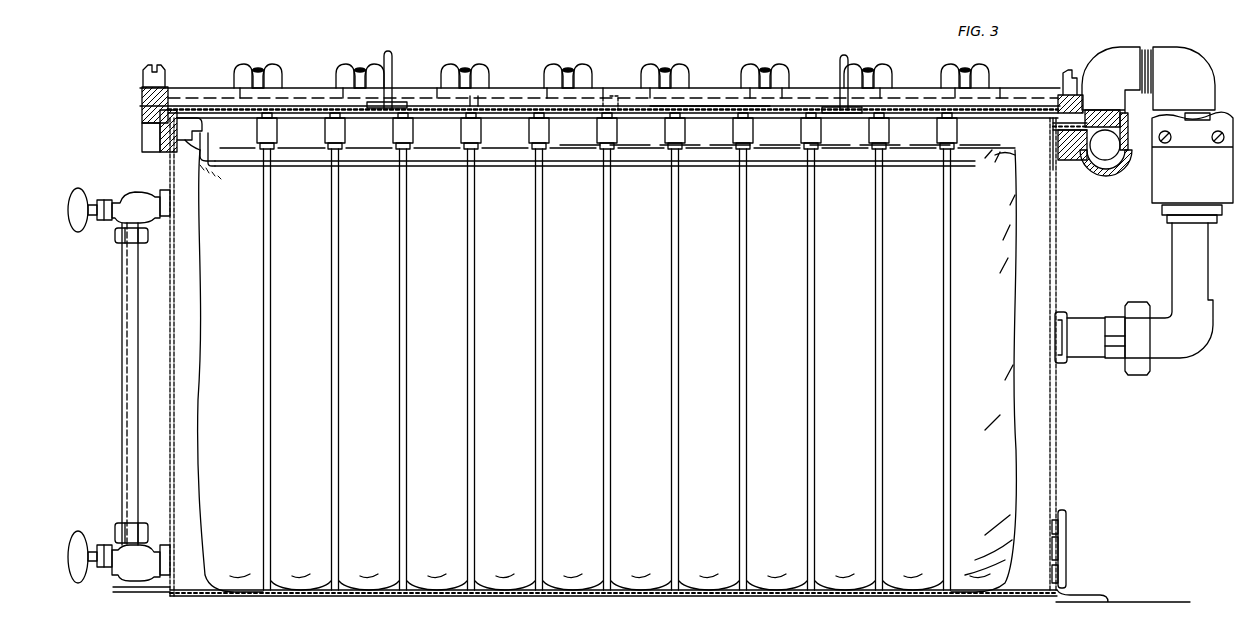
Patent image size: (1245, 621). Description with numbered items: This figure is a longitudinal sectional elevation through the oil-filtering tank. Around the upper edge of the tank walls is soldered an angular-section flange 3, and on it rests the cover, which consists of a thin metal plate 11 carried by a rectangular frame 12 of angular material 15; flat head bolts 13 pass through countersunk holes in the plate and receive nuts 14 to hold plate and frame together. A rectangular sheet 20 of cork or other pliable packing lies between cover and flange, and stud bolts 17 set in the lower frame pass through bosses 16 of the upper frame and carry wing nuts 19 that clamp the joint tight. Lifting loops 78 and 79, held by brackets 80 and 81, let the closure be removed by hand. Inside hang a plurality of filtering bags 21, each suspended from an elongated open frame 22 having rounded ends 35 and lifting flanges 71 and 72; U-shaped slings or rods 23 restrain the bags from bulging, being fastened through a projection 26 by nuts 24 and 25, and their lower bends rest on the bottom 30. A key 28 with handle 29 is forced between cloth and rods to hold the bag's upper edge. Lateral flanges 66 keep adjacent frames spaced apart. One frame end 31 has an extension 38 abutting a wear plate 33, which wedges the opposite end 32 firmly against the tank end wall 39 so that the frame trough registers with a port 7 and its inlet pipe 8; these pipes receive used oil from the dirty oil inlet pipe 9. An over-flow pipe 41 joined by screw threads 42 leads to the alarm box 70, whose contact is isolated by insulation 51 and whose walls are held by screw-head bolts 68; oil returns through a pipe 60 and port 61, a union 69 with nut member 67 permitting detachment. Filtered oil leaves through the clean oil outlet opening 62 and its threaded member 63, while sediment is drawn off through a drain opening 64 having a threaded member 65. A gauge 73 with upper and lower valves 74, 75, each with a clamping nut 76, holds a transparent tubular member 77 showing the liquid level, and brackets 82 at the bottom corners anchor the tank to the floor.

The flange 3 is at (140, 117).
The ports 7 is at (1052, 135).
The pipes 8 is at (1072, 152).
The dirty oil inlet pipe 9 is at (1106, 152).
The metal plate 11 is at (882, 116).
The rectangular frame 12 is at (1000, 98).
The flat head bolts 13 is at (616, 96).
The nuts 14 is at (606, 98).
The angular material 15 is at (713, 95).
The bosses 16 is at (140, 88).
The stud bolts 17 is at (259, 66).
The wing nuts 19 is at (574, 72).
The packing sheet 20 is at (1020, 123).
The filtering bags 21 is at (1012, 274).
The frame 22 is at (573, 136).
The U-shaped slings 23 is at (268, 280).
The nut 24 is at (688, 122).
The nut 25 is at (664, 146).
The projection 26 is at (535, 135).
The key 28 is at (587, 168).
The handle 29 is at (209, 139).
The bottom 30 is at (885, 598).
The end of frame 31 is at (214, 117).
The end of frame 32 is at (1062, 172).
The wear plate 33 is at (182, 108).
The rounded ends 35 is at (197, 145).
The extension 38 is at (141, 135).
The end wall 39 is at (1049, 240).
The over-flow pipe 41 is at (1125, 56).
The screw threads 42 is at (1122, 116).
The insulation 51 is at (1212, 119).
The pipe 60 is at (1203, 273).
The port 61 is at (1052, 332).
The clean oil outlet opening 62 is at (1052, 524).
The threaded member 63 is at (1066, 520).
The drain opening 64 is at (1050, 562).
The threaded member 65 is at (1066, 576).
The flanges 66 is at (346, 133).
The nut member 67 is at (1140, 365).
The screw-head bolts 68 is at (1214, 142).
The union 69 is at (1118, 362).
The box 70 is at (1162, 210).
The flanges 71 is at (335, 136).
The flanges 72 is at (811, 140).
The gauge 73 is at (120, 392).
The upper valve 74 is at (128, 194).
The lower valve 75 is at (128, 566).
The nut 76 is at (146, 244).
The transparent tubular member 77 is at (125, 422).
The lifting loop 78 is at (392, 56).
The lifting loop 79 is at (843, 55).
The bracket 80 is at (396, 102).
The bracket 81 is at (832, 95).
The brackets 82 is at (158, 594).